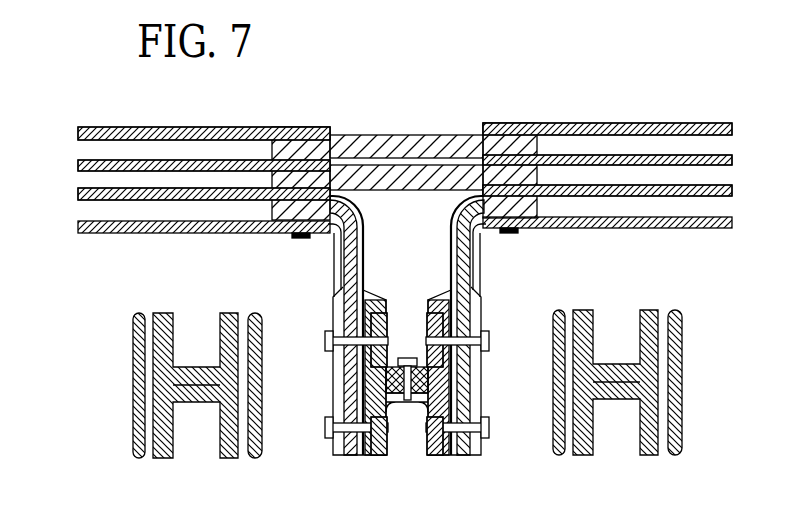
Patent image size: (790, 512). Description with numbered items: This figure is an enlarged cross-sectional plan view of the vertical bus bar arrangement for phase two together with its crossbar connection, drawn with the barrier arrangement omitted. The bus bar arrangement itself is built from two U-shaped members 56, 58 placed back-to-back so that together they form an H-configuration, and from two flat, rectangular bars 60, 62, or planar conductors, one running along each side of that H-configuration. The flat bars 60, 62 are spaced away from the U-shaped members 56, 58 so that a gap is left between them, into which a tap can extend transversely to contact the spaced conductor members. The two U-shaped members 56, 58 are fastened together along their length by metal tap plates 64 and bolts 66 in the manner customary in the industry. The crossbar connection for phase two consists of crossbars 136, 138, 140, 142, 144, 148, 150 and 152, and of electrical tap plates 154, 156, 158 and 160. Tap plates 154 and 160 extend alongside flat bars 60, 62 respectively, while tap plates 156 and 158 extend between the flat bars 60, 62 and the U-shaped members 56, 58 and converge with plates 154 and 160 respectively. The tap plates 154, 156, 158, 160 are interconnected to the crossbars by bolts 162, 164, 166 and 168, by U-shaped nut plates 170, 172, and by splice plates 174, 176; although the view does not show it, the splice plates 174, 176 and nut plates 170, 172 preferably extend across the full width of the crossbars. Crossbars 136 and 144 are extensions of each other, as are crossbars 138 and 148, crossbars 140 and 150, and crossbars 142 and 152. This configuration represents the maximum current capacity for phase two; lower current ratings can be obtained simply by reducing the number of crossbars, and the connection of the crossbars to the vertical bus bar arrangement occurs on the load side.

The U-shaped member 56 is at (446, 313).
The U-shaped member 58 is at (370, 456).
The flat rectangular bar 60 is at (466, 387).
The flat rectangular bar 62 is at (350, 387).
The metal tap plate 64 is at (391, 405).
The bolt 66 is at (416, 357).
The crossbar 136 is at (612, 231).
The crossbar 138 is at (730, 190).
The crossbar 140 is at (730, 160).
The crossbar 142 is at (730, 129).
The crossbar 144 is at (190, 235).
The crossbar 148 is at (80, 195).
The crossbar 150 is at (80, 164).
The crossbar 152 is at (80, 133).
The electrical tap plate 154 is at (467, 273).
The electrical tap plate 156 is at (450, 225).
The electrical tap plate 158 is at (360, 244).
The electrical tap plate 160 is at (345, 263).
The bolt 162 is at (489, 341).
The bolt 164 is at (489, 428).
The bolt 166 is at (325, 341).
The bolt 168 is at (325, 428).
The U-shaped nut plate 170 is at (380, 316).
The U-shaped nut plate 172 is at (432, 456).
The splice plate 174 is at (418, 174).
The splice plate 176 is at (378, 139).